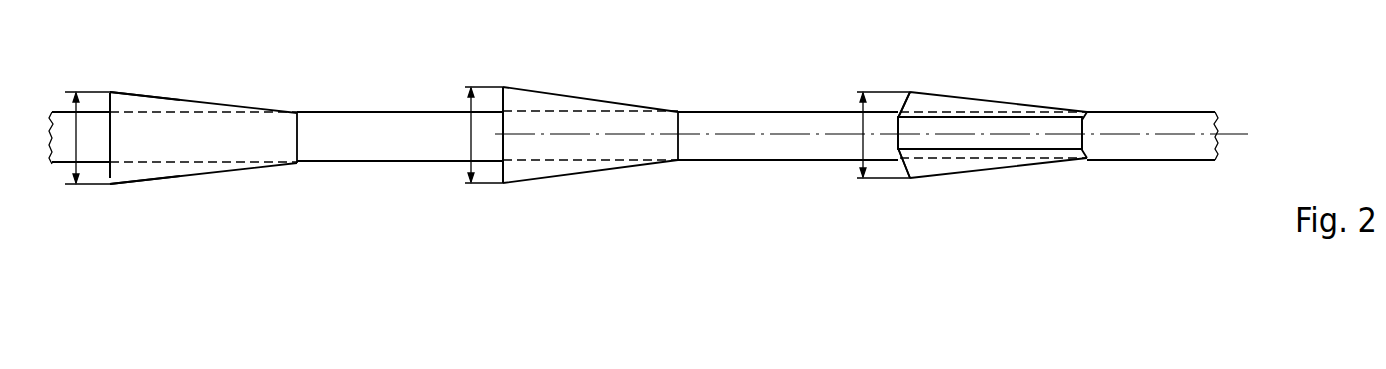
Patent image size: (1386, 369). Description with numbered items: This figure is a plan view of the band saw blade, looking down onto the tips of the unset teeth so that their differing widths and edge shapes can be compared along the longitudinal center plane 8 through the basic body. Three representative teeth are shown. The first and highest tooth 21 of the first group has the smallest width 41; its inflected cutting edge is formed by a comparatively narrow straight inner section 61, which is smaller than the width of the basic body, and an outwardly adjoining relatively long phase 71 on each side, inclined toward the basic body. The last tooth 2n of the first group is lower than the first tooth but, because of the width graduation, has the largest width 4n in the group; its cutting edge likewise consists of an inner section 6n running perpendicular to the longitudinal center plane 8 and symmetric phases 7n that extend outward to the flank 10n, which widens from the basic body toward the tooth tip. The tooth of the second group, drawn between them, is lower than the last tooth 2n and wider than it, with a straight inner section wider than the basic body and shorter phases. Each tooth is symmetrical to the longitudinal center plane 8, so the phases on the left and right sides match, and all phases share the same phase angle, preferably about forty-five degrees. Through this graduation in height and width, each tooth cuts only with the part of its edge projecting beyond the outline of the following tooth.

The last tooth of the first group 2n is at (188, 148).
The width of the last tooth 4n is at (87, 138).
The inner section of the last tooth 6n is at (110, 146).
The phase of the last tooth 7n is at (110, 100).
The flank of the last tooth 10n is at (113, 92).
The first tooth of the first group 21 is at (1010, 140).
The width of the first tooth 41 is at (881, 135).
The inner section of the first tooth 61 is at (898, 147).
The phase of the first tooth 71 is at (903, 108).
The longitudinal center plane 8 is at (1233, 134).